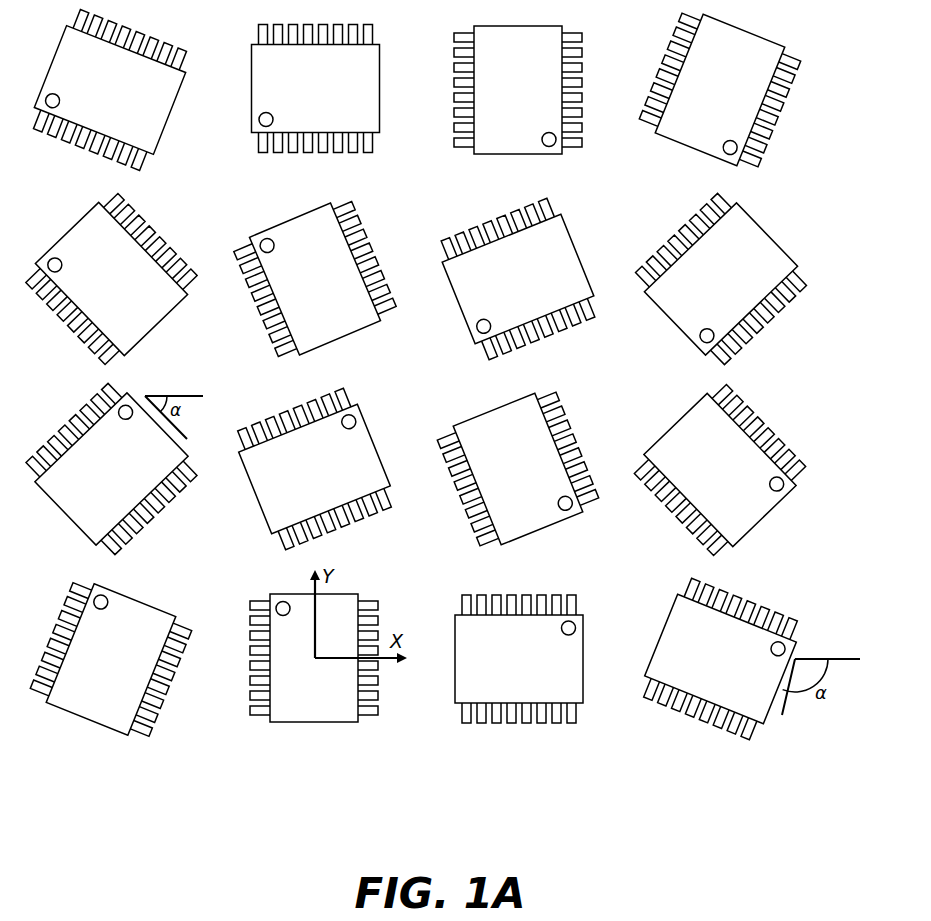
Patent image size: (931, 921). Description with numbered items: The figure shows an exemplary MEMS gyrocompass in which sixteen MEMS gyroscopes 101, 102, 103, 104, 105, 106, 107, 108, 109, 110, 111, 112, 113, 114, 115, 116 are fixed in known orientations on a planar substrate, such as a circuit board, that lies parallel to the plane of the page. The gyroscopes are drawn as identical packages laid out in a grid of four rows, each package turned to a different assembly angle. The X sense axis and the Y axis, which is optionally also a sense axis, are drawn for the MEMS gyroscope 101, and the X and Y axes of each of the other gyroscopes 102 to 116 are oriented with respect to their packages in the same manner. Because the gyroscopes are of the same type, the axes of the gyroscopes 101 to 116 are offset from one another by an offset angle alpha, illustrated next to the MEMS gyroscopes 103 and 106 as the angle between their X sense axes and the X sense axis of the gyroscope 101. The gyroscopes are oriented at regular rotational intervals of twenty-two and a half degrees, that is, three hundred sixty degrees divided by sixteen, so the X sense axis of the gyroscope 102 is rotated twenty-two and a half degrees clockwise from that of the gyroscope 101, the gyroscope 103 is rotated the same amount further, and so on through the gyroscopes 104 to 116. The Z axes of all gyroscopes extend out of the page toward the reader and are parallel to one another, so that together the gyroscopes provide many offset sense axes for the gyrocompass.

The MEMS gyroscope 101 is at (314, 658).
The MEMS gyroscope 102 is at (111, 659).
The MEMS gyroscope 103 is at (111, 469).
The MEMS gyroscope 104 is at (314, 469).
The MEMS gyroscope 105 is at (519, 659).
The MEMS gyroscope 106 is at (720, 659).
The MEMS gyroscope 107 is at (720, 470).
The MEMS gyroscope 108 is at (518, 469).
The MEMS gyroscope 109 is at (518, 90).
The MEMS gyroscope 110 is at (720, 90).
The MEMS gyroscope 111 is at (721, 279).
The MEMS gyroscope 112 is at (518, 279).
The MEMS gyroscope 113 is at (316, 89).
The MEMS gyroscope 114 is at (110, 90).
The MEMS gyroscope 115 is at (111, 279).
The MEMS gyroscope 116 is at (315, 279).